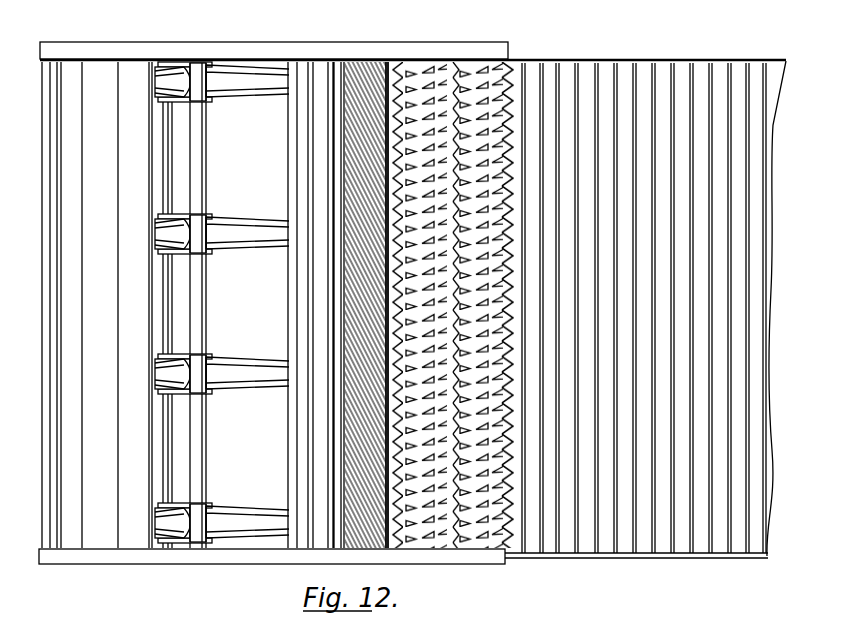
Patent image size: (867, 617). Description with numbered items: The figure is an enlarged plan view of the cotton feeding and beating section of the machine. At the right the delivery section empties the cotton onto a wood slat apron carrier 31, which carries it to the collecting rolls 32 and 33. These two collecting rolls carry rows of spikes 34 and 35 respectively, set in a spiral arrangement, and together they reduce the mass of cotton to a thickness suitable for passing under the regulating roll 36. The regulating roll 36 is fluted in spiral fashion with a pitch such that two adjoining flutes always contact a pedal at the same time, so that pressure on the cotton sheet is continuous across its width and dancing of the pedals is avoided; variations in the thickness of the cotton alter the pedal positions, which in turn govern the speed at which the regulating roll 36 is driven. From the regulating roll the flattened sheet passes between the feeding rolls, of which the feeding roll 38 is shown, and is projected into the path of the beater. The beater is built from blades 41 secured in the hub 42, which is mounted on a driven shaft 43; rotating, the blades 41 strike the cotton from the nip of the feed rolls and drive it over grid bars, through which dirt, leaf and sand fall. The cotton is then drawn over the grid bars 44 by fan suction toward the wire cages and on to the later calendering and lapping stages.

The wood slat apron carrier 31 is at (645, 86).
The collecting roll 32 is at (476, 70).
The collecting roll 33 is at (425, 70).
The rows of spikes 34 is at (490, 536).
The rows of spikes 35 is at (432, 536).
The regulating roll 36 is at (368, 70).
The feeding roll 38 is at (325, 70).
The blades 41 is at (122, 367).
The hub 42 is at (205, 256).
The driven shaft 43 is at (206, 156).
The grid bars 44 is at (57, 66).